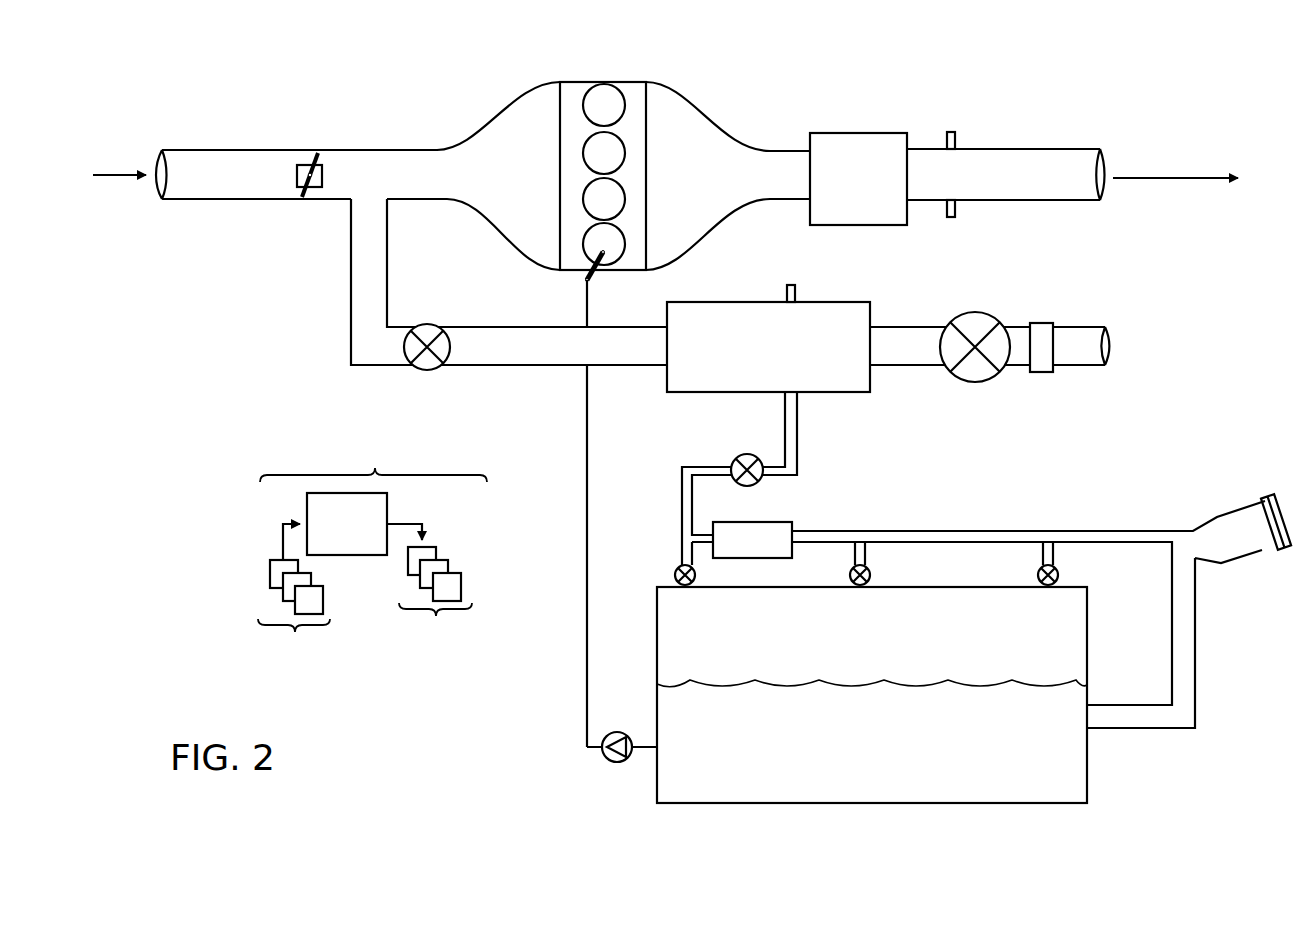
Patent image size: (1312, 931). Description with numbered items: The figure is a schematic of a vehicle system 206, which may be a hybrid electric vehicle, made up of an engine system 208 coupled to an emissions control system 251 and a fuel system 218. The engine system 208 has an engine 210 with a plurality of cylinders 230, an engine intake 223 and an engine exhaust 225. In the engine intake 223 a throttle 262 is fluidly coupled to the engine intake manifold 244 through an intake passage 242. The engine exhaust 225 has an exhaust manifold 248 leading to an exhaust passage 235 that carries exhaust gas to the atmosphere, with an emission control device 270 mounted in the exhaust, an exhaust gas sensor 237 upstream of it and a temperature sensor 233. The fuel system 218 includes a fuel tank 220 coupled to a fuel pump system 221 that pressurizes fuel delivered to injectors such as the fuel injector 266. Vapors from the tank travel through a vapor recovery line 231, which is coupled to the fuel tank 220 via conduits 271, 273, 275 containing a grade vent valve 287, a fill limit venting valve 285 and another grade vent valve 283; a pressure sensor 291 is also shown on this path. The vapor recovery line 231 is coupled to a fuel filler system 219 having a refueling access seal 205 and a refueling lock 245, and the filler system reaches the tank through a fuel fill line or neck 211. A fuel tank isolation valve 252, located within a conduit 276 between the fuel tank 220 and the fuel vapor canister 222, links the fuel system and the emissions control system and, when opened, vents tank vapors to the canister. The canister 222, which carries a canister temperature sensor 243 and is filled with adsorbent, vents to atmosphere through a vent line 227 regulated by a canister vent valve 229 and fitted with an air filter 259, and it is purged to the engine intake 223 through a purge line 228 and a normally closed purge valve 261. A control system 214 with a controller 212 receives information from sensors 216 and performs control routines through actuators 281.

The vehicle system 206 is at (176, 82).
The engine system 208 is at (664, 162).
The engine 210 is at (646, 160).
The cylinders 230 is at (622, 98).
The engine intake 223 is at (498, 169).
The engine intake manifold 244 is at (466, 78).
The intake passage 242 is at (343, 201).
The throttle 262 is at (322, 178).
The exhaust manifold 248 is at (728, 176).
The engine exhaust 225 is at (945, 160).
The emission control device 270 is at (846, 133).
The exhaust gas sensor 237 is at (946, 140).
The temperature sensor 233 is at (946, 210).
The exhaust passage 235 is at (1058, 149).
The emissions control system 251 is at (808, 473).
The purge line 228 is at (509, 282).
The purge valve 261 is at (428, 324).
The fuel injector 266 is at (594, 275).
The fuel vapor canister 222 is at (870, 322).
The canister temperature sensor 243 is at (786, 294).
The vent line 227 is at (990, 346).
The canister vent valve 229 is at (972, 312).
The air filter 259 is at (1047, 323).
The conduit 276 is at (692, 460).
The fuel tank isolation valve 252 is at (740, 484).
The pressure sensor 291 is at (792, 530).
The grade vent valve 287 is at (675, 575).
The conduit 271 is at (692, 553).
The vapor recovery line 231 is at (1105, 531).
The fill limit venting valve 285 is at (868, 573).
The conduit 273 is at (853, 554).
The grade vent valve 283 is at (1057, 572).
The conduit 275 is at (1040, 554).
The fuel system 218 is at (939, 622).
The fuel tank 220 is at (1087, 680).
The fuel pump system 221 is at (616, 732).
The fuel fill line or neck 211 is at (1197, 631).
The fuel filler system 219 is at (1243, 493).
The refueling access seal 205 is at (1268, 496).
The refueling lock 245 is at (1285, 548).
The control system 214 is at (372, 550).
The controller 212 is at (347, 524).
The sensors 216 is at (294, 598).
The actuators 281 is at (429, 590).